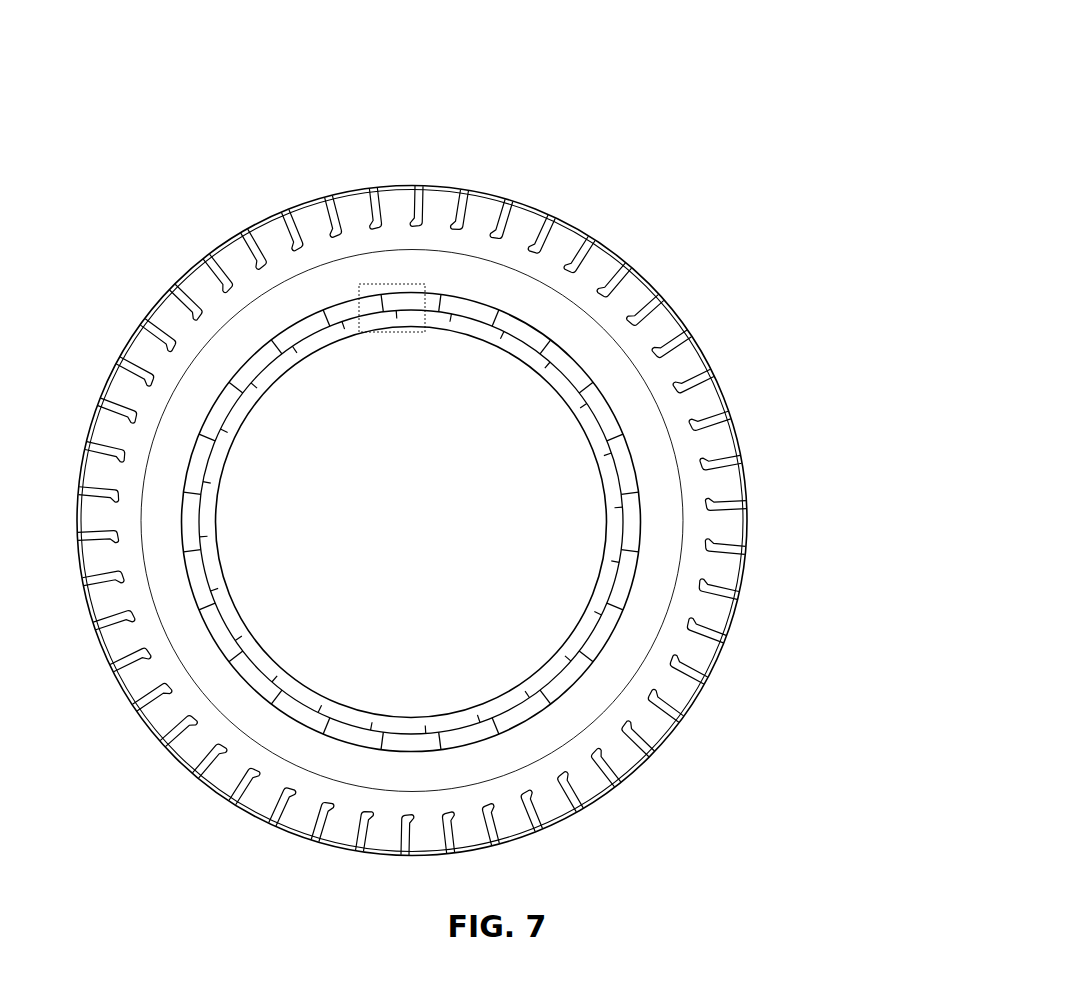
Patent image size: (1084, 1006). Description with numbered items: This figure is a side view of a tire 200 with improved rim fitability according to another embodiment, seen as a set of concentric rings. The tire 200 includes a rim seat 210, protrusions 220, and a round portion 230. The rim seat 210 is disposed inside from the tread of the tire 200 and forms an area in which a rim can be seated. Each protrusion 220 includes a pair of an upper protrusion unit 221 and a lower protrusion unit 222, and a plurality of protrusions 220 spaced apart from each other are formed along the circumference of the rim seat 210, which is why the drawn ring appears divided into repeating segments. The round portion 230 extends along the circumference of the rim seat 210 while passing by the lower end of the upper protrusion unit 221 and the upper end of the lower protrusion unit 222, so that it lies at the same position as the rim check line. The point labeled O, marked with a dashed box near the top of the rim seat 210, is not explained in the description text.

The tire 200 is at (563, 80).
The rim seat 210 is at (545, 246).
The protrusion 220 is at (787, 236).
The upper protrusion unit 221 is at (556, 340).
The lower protrusion unit 222 is at (570, 374).
The round portion 230 is at (592, 645).
The origin point O is at (400, 285).